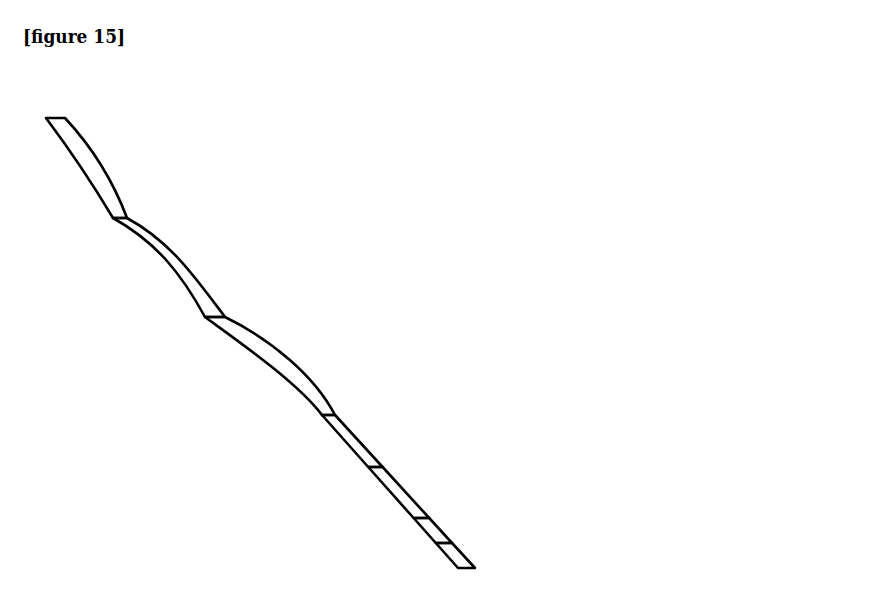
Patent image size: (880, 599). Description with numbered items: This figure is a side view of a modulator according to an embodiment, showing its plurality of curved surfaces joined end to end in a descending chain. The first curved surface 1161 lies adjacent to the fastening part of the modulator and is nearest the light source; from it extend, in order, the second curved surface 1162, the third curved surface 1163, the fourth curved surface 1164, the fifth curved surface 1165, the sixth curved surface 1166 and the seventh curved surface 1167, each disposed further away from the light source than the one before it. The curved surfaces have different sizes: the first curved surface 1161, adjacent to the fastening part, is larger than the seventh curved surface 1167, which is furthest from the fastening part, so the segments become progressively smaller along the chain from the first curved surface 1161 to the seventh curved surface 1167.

The first curved surface 1161 is at (88, 153).
The second curved surface 1162 is at (165, 250).
The third curved surface 1163 is at (262, 333).
The fourth curved surface 1164 is at (358, 435).
The fifth curved surface 1165 is at (405, 486).
The sixth curved surface 1166 is at (438, 528).
The seventh curved surface 1167 is at (465, 555).